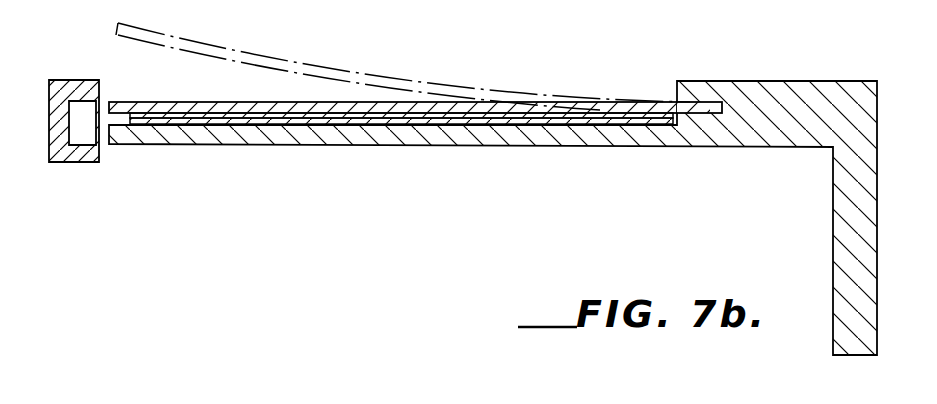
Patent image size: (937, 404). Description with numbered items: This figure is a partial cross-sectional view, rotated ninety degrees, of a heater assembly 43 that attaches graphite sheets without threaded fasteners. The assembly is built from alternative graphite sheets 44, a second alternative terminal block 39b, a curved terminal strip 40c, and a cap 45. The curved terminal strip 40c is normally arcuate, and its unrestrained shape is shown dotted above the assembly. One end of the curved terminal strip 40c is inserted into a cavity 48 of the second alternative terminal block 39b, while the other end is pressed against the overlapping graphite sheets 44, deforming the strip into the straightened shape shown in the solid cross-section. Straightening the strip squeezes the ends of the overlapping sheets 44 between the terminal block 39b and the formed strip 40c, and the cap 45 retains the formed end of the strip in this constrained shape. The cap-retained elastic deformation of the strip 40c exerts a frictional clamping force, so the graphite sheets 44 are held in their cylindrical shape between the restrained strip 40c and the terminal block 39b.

The second alternative terminal block 39b is at (798, 85).
The heater assembly 43 is at (433, 97).
The alternative graphite sheets 44 is at (444, 115).
The cap 45 is at (90, 163).
The cavity 48 is at (710, 107).
The curved terminal strip 40c is at (302, 101).